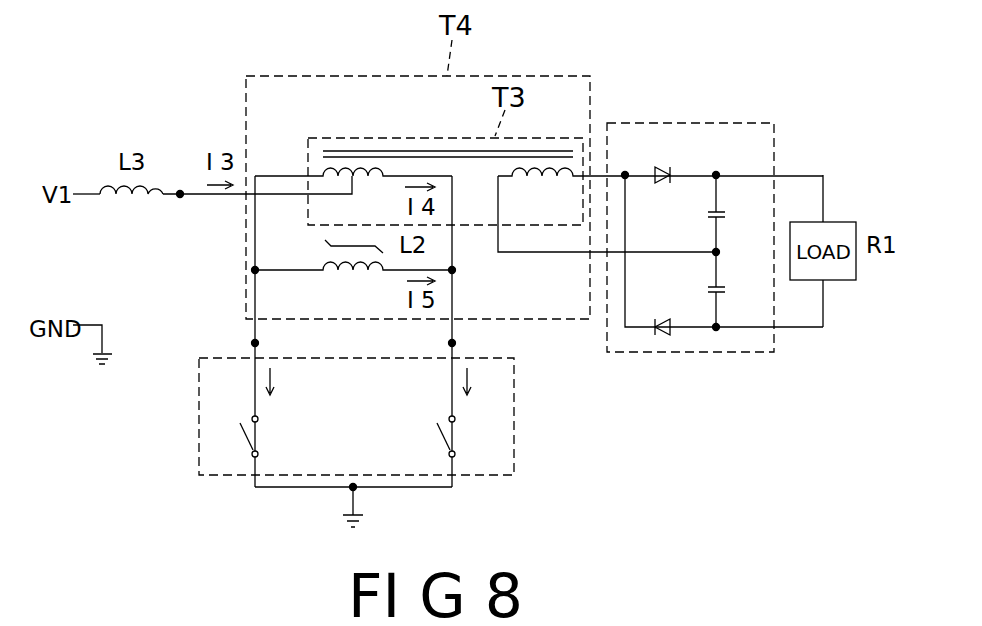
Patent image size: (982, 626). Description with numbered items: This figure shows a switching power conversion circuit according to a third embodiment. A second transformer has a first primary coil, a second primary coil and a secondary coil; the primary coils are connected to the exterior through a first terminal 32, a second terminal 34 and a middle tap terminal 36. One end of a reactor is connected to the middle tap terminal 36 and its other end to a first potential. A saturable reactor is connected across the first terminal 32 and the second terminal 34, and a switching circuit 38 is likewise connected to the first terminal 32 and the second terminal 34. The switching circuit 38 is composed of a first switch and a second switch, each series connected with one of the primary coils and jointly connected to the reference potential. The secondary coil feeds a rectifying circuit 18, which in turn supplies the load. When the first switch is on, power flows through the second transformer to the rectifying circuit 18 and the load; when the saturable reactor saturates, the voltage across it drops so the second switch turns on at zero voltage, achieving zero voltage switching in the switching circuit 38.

The rectifying circuit 18 is at (700, 123).
The first terminal 32 is at (255, 343).
The second terminal 34 is at (452, 343).
The middle tap terminal 36 is at (180, 194).
The switching circuit 38 is at (514, 428).